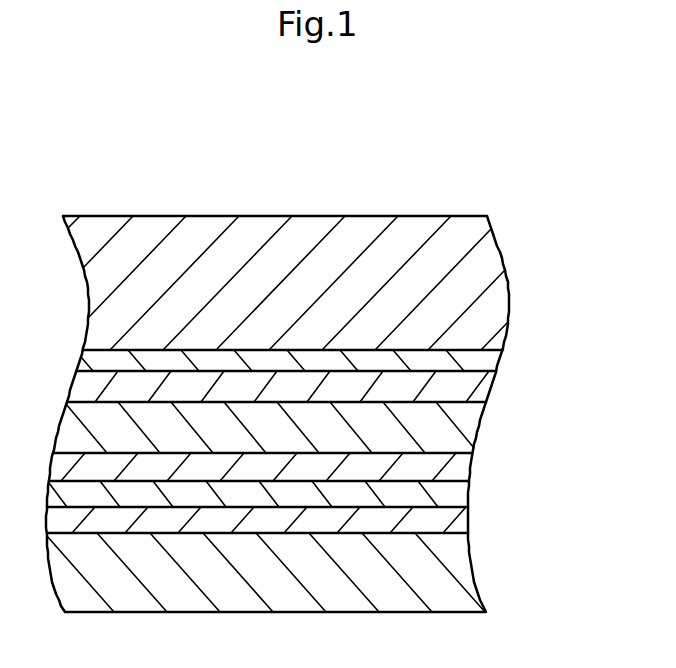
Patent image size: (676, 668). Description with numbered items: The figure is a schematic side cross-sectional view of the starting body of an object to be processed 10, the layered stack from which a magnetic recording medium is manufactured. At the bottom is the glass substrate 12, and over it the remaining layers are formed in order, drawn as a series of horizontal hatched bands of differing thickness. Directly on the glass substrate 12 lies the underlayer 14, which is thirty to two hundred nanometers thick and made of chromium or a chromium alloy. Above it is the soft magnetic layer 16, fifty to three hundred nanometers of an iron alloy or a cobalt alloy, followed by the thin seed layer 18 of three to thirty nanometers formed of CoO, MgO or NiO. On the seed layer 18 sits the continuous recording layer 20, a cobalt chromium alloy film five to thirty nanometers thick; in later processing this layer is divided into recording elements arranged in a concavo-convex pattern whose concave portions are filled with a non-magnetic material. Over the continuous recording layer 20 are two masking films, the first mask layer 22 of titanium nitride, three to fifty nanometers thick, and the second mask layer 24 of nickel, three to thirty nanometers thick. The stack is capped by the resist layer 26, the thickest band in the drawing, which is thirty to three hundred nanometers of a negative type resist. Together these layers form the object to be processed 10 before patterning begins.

The starting body of an object to be processed 10 is at (319, 161).
The glass substrate 12 is at (472, 567).
The underlayer 14 is at (468, 522).
The soft magnetic layer 16 is at (468, 497).
The seed layer 18 is at (472, 470).
The continuous recording layer 20 is at (483, 421).
The first mask layer 22 is at (495, 387).
The second mask layer 24 is at (502, 362).
The resist layer 26 is at (508, 280).